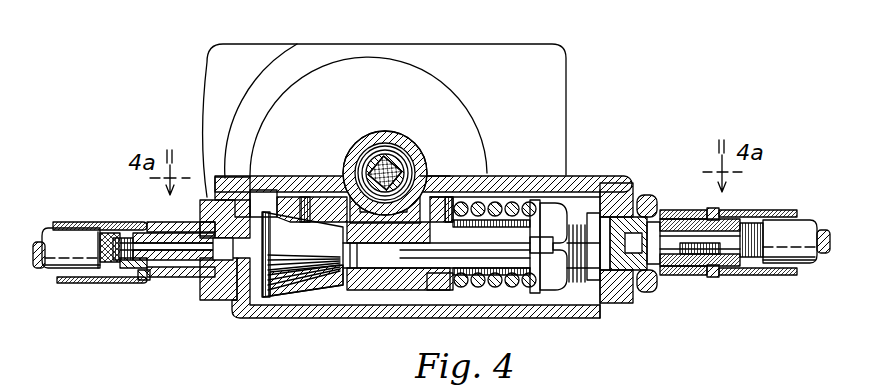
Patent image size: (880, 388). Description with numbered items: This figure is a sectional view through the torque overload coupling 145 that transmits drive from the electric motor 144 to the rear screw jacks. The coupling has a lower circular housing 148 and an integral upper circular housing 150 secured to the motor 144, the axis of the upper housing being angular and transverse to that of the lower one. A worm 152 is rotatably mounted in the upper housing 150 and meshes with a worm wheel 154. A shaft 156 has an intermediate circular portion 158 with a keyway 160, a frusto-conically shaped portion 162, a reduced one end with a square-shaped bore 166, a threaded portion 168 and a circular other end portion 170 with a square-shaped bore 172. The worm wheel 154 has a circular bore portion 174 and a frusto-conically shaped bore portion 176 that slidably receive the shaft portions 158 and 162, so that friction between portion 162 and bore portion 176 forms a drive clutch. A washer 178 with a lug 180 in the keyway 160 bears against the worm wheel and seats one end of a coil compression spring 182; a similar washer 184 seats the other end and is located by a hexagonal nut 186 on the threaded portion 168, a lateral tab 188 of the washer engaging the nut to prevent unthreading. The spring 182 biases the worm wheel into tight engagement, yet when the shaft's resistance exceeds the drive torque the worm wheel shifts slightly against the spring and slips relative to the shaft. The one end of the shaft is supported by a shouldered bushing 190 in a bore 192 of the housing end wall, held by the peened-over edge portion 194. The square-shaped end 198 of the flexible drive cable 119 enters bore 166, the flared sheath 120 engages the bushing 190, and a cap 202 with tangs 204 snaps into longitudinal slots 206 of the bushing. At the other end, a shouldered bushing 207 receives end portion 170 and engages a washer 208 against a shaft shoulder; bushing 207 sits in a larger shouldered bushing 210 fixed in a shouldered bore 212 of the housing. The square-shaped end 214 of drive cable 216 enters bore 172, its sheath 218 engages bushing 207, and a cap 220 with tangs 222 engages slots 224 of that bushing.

The flexible drive cable 119 is at (98, 233).
The sheath 120 is at (47, 228).
The electric motor 144 is at (566, 73).
The torque overload coupling 145 is at (421, 120).
The lower circular housing 148 is at (590, 176).
The upper circular housing 150 is at (361, 137).
The worm 152 is at (390, 158).
The worm wheel 154 is at (207, 235).
The shaft 156 is at (357, 268).
The intermediate circular portion 158 is at (420, 273).
The keyway 160 is at (405, 240).
The frusto-conically shaped portion 162 is at (273, 287).
The square-shaped bore 166 is at (160, 242).
The threaded portion 168 is at (583, 283).
The circular other end portion 170 is at (600, 233).
The square-shaped bore 172 is at (727, 230).
The circular bore portion 174 is at (347, 212).
The frusto-conically shaped bore portion 176 is at (307, 217).
The washer 178 is at (482, 190).
The lug 180 is at (422, 253).
The coil compression spring 182 is at (527, 205).
The washer 184 is at (530, 297).
The hexagonal nut 186 is at (556, 208).
The lateral tab 188 is at (548, 290).
The shouldered bushing 190 is at (243, 193).
The bore 192 is at (233, 310).
The edge portion 194 is at (200, 292).
The square-shaped end 198 is at (128, 262).
The cap 202 is at (75, 284).
The tangs 204 is at (145, 278).
The longitudinal slots 206 is at (160, 276).
The shouldered bushing 207 is at (655, 222).
The washer 208 is at (595, 290).
The shouldered bushing 210 is at (640, 300).
The shouldered bore 212 is at (637, 196).
The square-shaped end 214 is at (678, 235).
The drive cable 216 is at (826, 232).
The sheath 218 is at (808, 268).
The cap 220 is at (780, 275).
The tangs 222 is at (713, 278).
The slots 224 is at (690, 275).